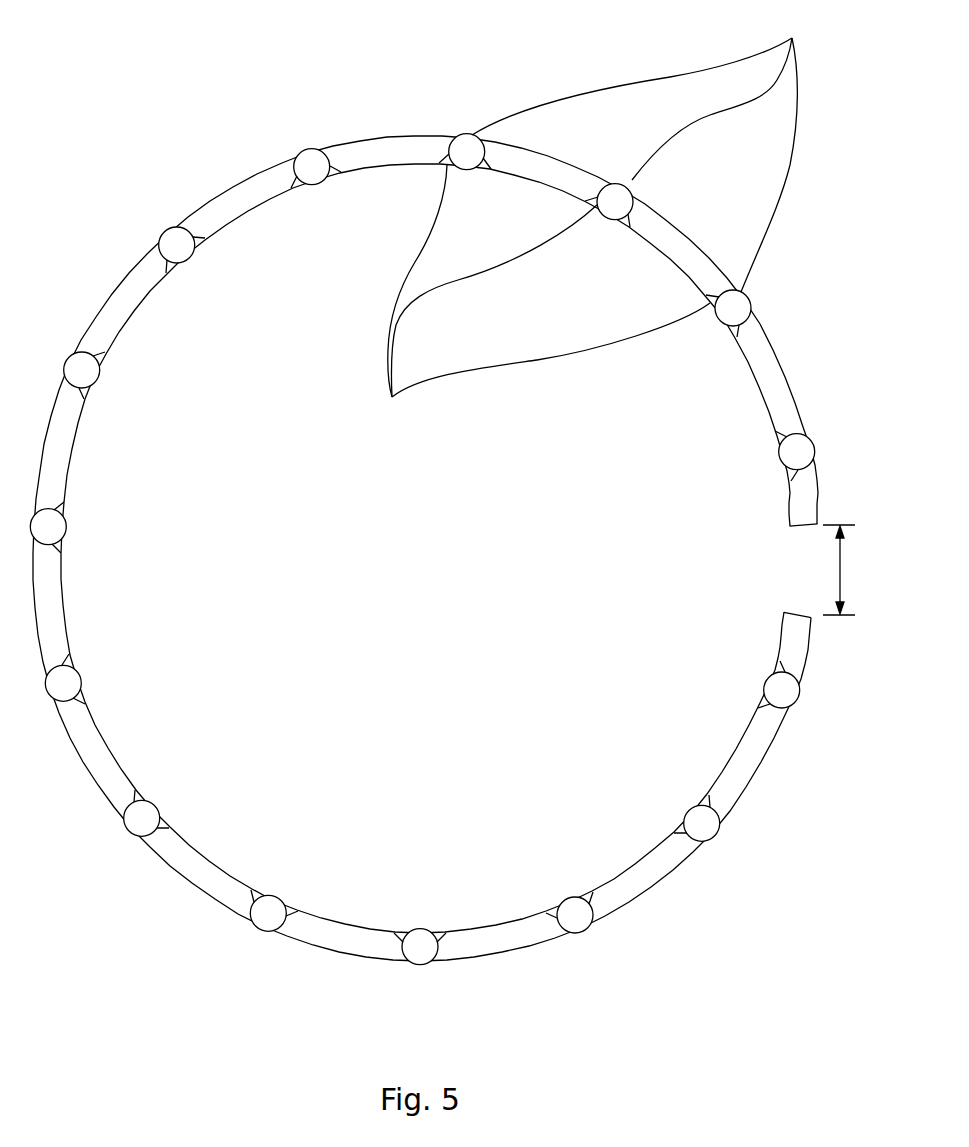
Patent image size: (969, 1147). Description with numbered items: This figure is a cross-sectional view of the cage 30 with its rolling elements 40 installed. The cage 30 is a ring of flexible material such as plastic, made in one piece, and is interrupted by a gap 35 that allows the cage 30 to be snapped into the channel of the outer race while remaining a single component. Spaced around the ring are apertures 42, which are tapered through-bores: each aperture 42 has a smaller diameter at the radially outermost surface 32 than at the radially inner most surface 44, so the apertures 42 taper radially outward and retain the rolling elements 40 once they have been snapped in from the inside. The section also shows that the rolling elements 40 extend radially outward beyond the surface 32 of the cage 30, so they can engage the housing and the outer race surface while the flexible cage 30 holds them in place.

The cage 30 is at (463, 524).
The radially outermost surface 32 is at (647, 892).
The gap 35 is at (842, 578).
The rolling elements 40 is at (792, 38).
The apertures 42 is at (544, 298).
The radially inner most surface 44 is at (208, 858).